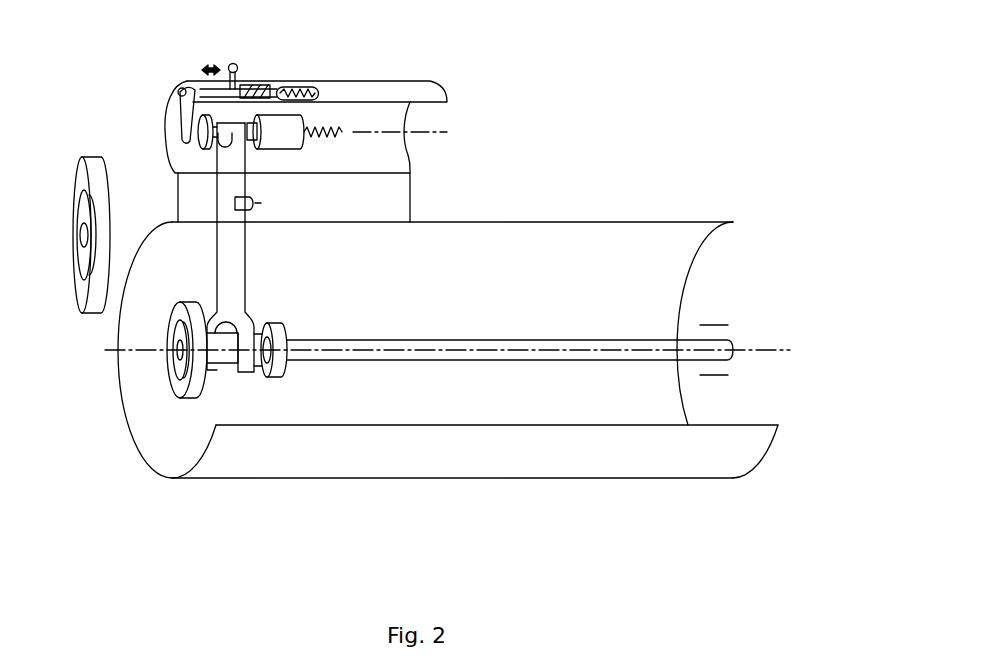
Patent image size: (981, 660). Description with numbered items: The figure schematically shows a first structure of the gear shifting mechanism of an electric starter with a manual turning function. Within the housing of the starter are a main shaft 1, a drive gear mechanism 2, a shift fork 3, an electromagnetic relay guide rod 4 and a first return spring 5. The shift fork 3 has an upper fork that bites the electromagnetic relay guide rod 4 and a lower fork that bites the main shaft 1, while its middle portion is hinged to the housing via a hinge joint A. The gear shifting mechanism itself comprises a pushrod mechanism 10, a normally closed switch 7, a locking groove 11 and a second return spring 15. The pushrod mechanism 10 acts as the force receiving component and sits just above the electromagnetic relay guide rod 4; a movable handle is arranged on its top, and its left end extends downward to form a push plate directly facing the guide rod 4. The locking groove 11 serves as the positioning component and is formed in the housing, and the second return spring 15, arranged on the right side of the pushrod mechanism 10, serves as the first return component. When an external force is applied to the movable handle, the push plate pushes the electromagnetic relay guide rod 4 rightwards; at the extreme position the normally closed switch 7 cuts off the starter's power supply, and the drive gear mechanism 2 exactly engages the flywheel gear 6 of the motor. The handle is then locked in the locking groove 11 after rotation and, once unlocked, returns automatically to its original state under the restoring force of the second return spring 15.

The main shaft 1 is at (410, 348).
The drive gear mechanism 2 is at (181, 378).
The shift fork 3 is at (233, 288).
The electromagnetic relay guide rod 4 is at (248, 127).
The first return spring 5 is at (320, 131).
The flywheel gear 6 is at (83, 287).
The normally closed switch 7 is at (248, 85).
The pushrod mechanism 10 is at (200, 93).
The locking groove 11 is at (258, 88).
The second return spring 15 is at (311, 89).
The hinge joint A is at (235, 202).